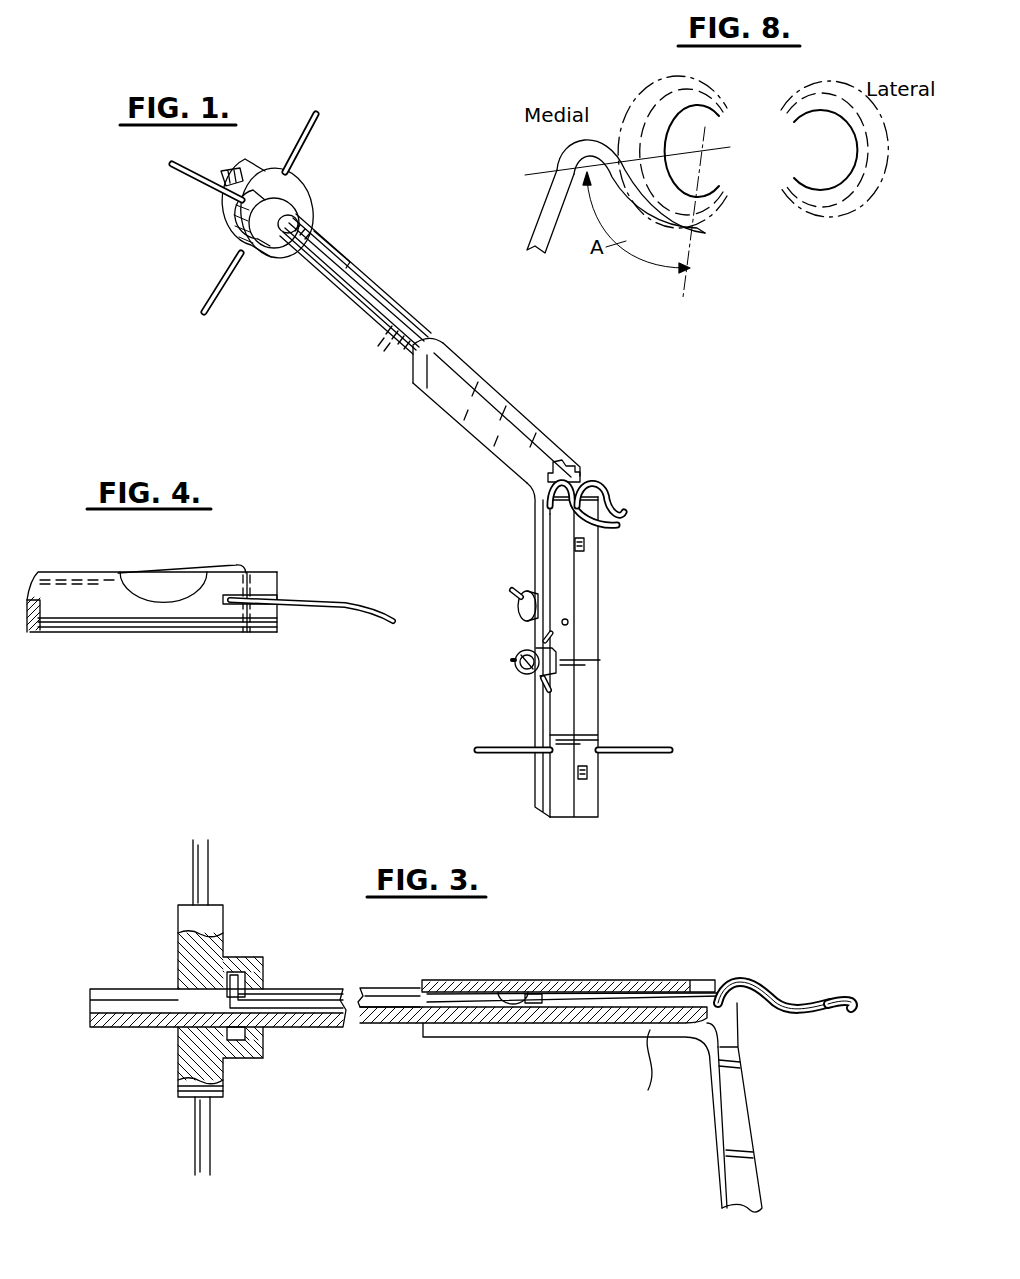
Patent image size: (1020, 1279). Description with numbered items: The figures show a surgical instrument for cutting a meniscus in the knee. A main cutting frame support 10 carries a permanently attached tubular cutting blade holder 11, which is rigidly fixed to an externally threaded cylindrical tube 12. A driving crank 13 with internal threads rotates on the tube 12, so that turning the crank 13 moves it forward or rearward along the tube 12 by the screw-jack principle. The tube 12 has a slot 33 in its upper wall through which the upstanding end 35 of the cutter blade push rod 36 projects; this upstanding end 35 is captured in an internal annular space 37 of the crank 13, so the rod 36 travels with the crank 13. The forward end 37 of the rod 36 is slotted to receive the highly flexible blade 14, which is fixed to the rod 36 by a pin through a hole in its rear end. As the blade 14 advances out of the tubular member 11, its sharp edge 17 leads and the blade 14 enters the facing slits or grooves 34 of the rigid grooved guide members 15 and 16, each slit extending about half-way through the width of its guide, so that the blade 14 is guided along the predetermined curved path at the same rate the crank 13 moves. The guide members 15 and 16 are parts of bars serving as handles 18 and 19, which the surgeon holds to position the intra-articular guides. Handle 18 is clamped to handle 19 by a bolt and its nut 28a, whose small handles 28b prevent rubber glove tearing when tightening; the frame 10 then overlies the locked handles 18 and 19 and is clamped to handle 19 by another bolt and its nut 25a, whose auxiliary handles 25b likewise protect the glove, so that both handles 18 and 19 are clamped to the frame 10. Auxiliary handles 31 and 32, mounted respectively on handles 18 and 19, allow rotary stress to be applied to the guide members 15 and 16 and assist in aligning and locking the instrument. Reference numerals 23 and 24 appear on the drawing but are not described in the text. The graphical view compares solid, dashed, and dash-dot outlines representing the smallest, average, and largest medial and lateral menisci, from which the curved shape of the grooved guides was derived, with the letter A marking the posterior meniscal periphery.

In FIG. 1, the main cutting frame support 10 is at (455, 421).
In FIG. 3, the main cutting frame support 10 is at (708, 1105).
In FIG. 1, the tubular cutting blade holder 11 is at (490, 396).
In FIG. 3, the tubular cutting blade holder 11 is at (645, 984).
In FIG. 1, the cylindrical tube 12 is at (378, 300).
In FIG. 3, the cylindrical tube 12 is at (303, 1020).
In FIG. 1, the driving crank 13 is at (292, 198).
In FIG. 3, the driving crank 13 is at (211, 916).
In FIG. 1, the blade 14 is at (577, 478).
In FIG. 4, the blade 14 is at (353, 603).
In FIG. 3, the blade 14 is at (720, 990).
In FIG. 1, the grooved guide member 15 is at (610, 511).
In FIG. 3, the grooved guide member 15 is at (816, 1024).
In FIG. 1, the grooved guide member 16 is at (567, 505).
In FIG. 1, the sharp edge 17 is at (602, 525).
In FIG. 1, the handle 18 is at (597, 620).
In FIG. 3, the handle 18 is at (739, 1098).
In FIG. 1, the handle 19 is at (565, 705).
In FIG. 1, the upper latch 23 is at (584, 548).
In FIG. 1, the lower latch 24 is at (588, 774).
In FIG. 1, the nut 25a is at (519, 609).
In FIG. 1, the auxiliary handles 25b is at (516, 590).
In FIG. 1, the nut 28a is at (515, 659).
In FIG. 1, the handles 28b is at (541, 682).
In FIG. 1, the auxiliary handle 31 is at (640, 747).
In FIG. 1, the auxiliary handle 32 is at (508, 747).
In FIG. 3, the slot 33 is at (284, 990).
In FIG. 3, the slits or grooves 34 is at (799, 1011).
In FIG. 3, the upstanding end 35 is at (238, 978).
In FIG. 4, the cutter blade push rod 36 is at (177, 572).
In FIG. 3, the cutter blade push rod 36 is at (383, 1002).
In FIG. 4, the forward end of rod / internal annular space 37 is at (256, 582).
In FIG. 3, the forward end of rod / internal annular space 37 is at (240, 1040).